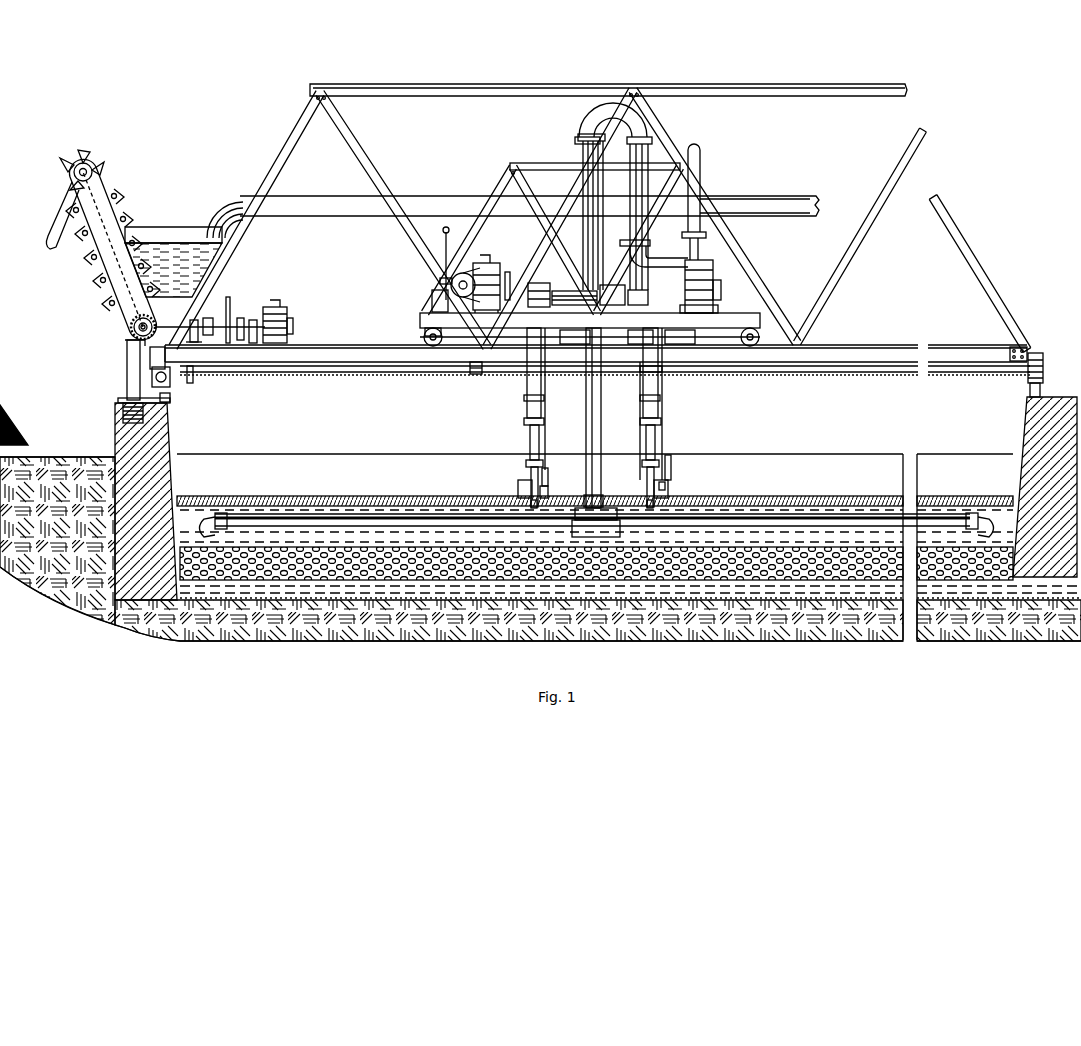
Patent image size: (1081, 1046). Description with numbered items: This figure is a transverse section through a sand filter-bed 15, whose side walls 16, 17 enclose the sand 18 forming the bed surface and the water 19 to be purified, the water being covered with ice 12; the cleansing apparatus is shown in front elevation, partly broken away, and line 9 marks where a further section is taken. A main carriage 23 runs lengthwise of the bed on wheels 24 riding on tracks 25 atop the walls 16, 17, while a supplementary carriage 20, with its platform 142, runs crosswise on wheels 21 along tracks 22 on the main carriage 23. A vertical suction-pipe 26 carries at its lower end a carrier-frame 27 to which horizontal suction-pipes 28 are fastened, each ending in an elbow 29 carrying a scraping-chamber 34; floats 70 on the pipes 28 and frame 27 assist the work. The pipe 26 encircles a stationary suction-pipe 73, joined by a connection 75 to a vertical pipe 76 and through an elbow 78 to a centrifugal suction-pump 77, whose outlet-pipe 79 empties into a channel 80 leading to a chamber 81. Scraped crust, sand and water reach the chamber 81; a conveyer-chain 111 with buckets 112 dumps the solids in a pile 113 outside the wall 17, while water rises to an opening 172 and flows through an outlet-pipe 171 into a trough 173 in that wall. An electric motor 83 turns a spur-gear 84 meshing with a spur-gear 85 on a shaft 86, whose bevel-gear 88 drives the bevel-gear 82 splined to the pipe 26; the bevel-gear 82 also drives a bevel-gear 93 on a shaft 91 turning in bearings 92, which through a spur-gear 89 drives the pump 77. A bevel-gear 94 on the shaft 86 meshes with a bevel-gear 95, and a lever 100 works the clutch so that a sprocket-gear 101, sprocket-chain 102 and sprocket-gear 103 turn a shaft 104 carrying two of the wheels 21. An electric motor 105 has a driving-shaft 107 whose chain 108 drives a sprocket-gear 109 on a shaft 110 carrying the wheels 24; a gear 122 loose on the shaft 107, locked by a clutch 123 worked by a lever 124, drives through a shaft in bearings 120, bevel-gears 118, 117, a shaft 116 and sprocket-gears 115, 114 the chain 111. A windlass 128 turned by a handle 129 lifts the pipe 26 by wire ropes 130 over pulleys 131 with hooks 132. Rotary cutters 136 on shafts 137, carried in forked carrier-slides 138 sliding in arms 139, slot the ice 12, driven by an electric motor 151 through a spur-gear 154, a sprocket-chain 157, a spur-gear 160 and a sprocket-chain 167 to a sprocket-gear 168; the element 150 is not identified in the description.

The section line 9 is at (597, 295).
The ice 12 is at (318, 496).
The sand filter-bed 15 is at (742, 560).
The side wall 16 is at (1025, 447).
The side wall 17 is at (180, 440).
The sand 18 is at (765, 545).
The water 19 is at (862, 496).
The supplementary carriage 20 is at (508, 170).
The wheels 21 is at (430, 347).
The tracks 22 is at (372, 364).
The main carriage 23 is at (975, 262).
The wheels 24 is at (170, 383).
The tracks 25 is at (167, 403).
The vertical suction-pipe 26 is at (586, 440).
The carrier-frame 27 is at (572, 530).
The horizontal suction-pipe 28 is at (382, 515).
The elbow 29 is at (206, 518).
The scraping-chamber 34 is at (224, 513).
The floats 70 is at (518, 500).
The stationary suction-pipe 73 is at (583, 205).
The connection 75 is at (578, 124).
The vertical pipe 76 is at (653, 206).
The centrifugal suction-pump 77 is at (700, 248).
The elbow 78 is at (646, 262).
The outlet-pipe 79 is at (700, 215).
The channel 80 is at (335, 216).
The chamber 81 is at (176, 242).
The bevel-gear 82 is at (527, 380).
The electric motor 83 is at (490, 262).
The spur-gear 84 is at (473, 285).
The spur-gear 85 is at (495, 275).
The shaft 86 is at (540, 283).
The bevel-gear 88 is at (480, 364).
The spur-gear 89 is at (713, 280).
The shaft 91 is at (723, 290).
The bearings 92 is at (718, 300).
The bevel-gear 93 is at (650, 306).
The bevel-gear 94 is at (448, 232).
The bevel-gear 95 is at (432, 298).
The lever 100 is at (444, 256).
The sprocket-gear 101 is at (440, 282).
The sprocket-chain 102 is at (430, 334).
The sprocket-gear 103 is at (424, 339).
The shaft 104 is at (437, 347).
The electric motor 105 is at (294, 326).
The driving-shaft 107 is at (268, 305).
The chain 108 is at (196, 343).
The sprocket-gear 109 is at (192, 383).
The shaft 110 is at (300, 373).
The conveyer-chain 111 is at (93, 176).
The buckets 112 is at (100, 175).
The pile 113 is at (30, 434).
The sprocket-gear 114 is at (90, 160).
The sprocket-gear 115 is at (138, 332).
The shaft 116 is at (135, 347).
The bevel-gear 117 is at (130, 327).
The bevel-gear 118 is at (133, 375).
The bearings 120 is at (232, 300).
The gear 122 is at (210, 318).
The clutch 123 is at (226, 318).
The lever 124 is at (253, 345).
The windlass 128 is at (640, 240).
The handle 129 is at (237, 330).
The wire ropes 130 is at (700, 145).
The pulleys 131 is at (650, 150).
The hooks 132 is at (620, 292).
The rotary cutters 136 is at (537, 505).
The shaft 137 is at (549, 488).
The forked carrier-slide 138 is at (527, 445).
The arm 139 is at (660, 398).
The platform 142 is at (748, 328).
The shoe 150 is at (590, 493).
The electric motor 151 is at (782, 296).
The spur-gear 154 is at (648, 345).
The sprocket-chain 157 is at (640, 430).
The spur-gear 160 is at (668, 458).
The sprocket-chain 167 is at (546, 413).
The sprocket-gear 168 is at (549, 472).
The outlet-pipe 171 is at (118, 400).
The opening 172 is at (152, 227).
The trough 173 is at (115, 448).